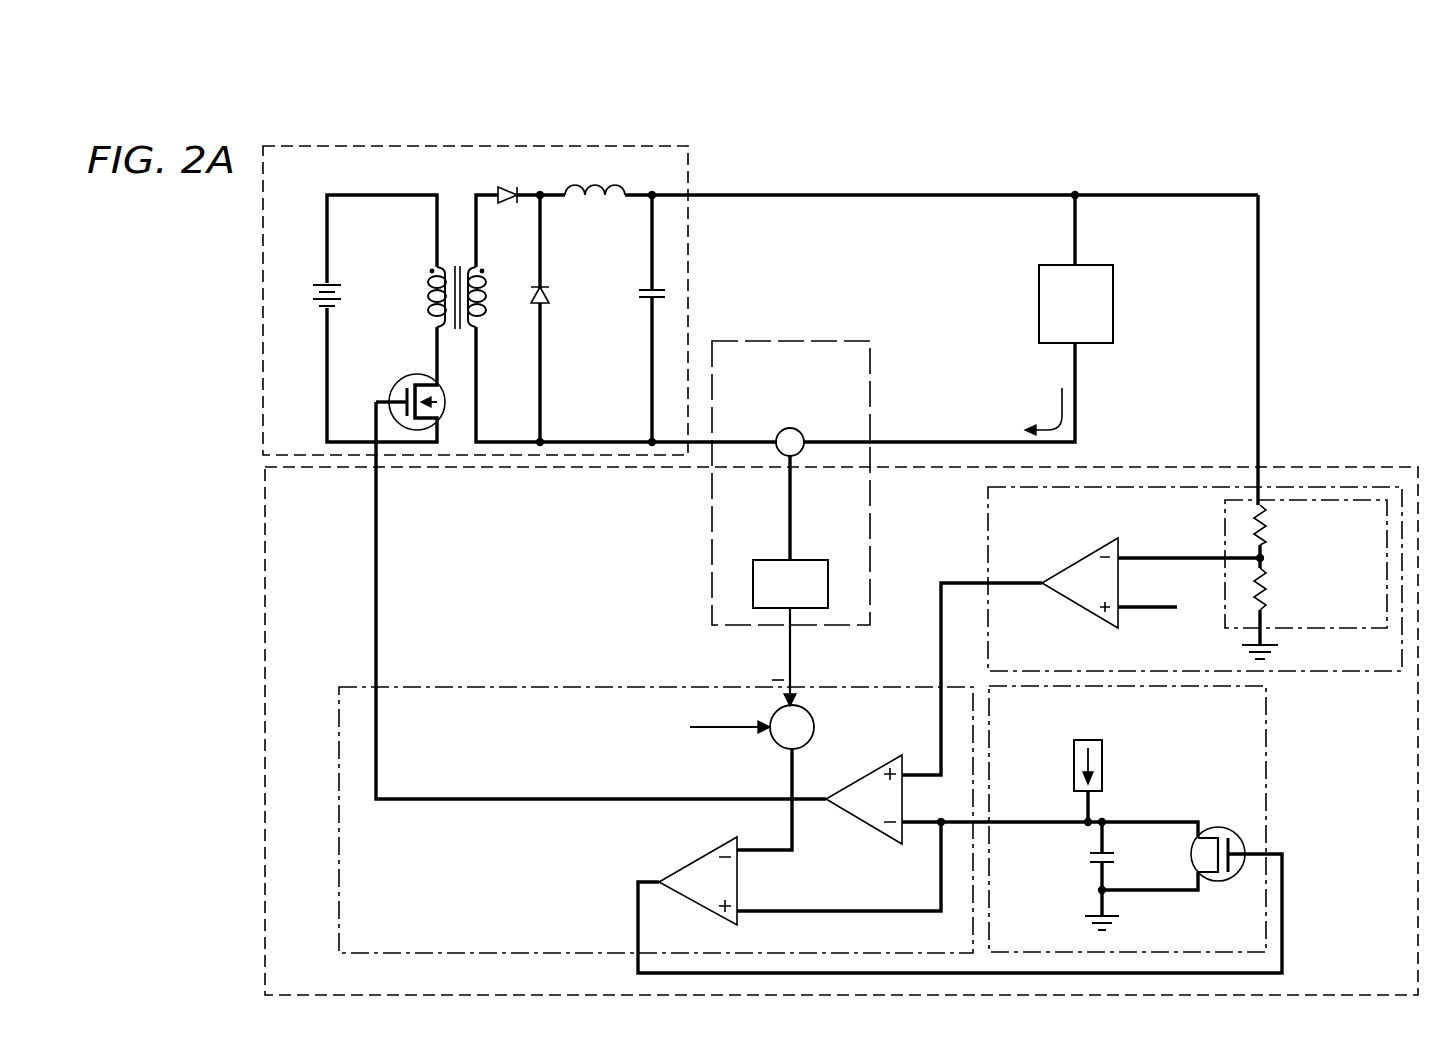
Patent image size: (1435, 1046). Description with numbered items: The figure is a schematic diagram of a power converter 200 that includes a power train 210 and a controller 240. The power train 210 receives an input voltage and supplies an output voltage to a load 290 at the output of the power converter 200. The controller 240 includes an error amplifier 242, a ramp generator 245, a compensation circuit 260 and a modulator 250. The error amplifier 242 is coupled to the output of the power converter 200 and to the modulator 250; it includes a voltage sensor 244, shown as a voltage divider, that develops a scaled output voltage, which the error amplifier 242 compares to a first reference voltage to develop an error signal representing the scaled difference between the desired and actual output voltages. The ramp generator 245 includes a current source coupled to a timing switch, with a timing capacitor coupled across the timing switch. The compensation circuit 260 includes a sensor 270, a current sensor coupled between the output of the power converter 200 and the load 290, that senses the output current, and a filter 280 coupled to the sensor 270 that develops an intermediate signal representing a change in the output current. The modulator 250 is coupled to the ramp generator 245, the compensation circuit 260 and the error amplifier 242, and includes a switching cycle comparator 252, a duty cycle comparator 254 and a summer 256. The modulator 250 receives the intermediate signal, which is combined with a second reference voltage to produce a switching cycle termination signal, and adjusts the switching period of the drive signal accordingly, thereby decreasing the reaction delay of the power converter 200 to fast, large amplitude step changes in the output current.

The power converter 200 is at (207, 241).
The power train 210 is at (688, 166).
The controller 240 is at (264, 969).
The error amplifier 242 is at (986, 510).
The voltage sensor 244 is at (1360, 632).
The ramp generator 245 is at (1266, 700).
The modulator 250 is at (338, 937).
The switching cycle comparator 252 is at (702, 860).
The duty cycle comparator 254 is at (870, 766).
The summer 256 is at (774, 745).
The compensation circuit 260 is at (840, 340).
The sensor 270 is at (800, 431).
The filter 280 is at (821, 560).
The load 290 is at (1113, 303).